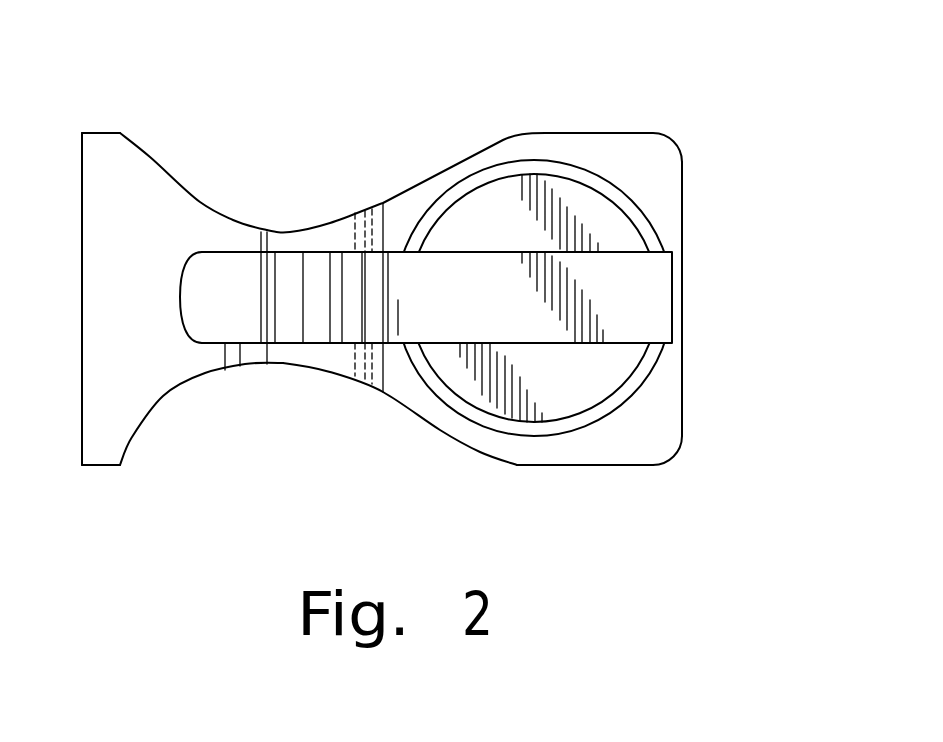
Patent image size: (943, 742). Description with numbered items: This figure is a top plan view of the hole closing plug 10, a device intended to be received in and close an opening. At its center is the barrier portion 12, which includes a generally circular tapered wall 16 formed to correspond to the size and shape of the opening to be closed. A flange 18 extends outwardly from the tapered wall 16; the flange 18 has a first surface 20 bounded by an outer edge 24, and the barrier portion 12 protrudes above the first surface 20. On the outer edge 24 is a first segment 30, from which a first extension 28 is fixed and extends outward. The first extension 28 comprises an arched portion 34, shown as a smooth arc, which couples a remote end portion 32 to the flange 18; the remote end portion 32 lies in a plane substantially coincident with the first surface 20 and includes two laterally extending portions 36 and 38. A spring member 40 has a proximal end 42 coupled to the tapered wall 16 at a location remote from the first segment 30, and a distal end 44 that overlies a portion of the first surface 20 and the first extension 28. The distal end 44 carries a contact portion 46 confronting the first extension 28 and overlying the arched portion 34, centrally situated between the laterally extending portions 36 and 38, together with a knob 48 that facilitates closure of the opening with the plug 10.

The hole closing plug 10 is at (415, 264).
The barrier portion 12 is at (570, 193).
The tapered wall 16 is at (459, 198).
The flange 18 is at (667, 198).
The first surface 20 is at (652, 436).
The outer edge 24 is at (617, 465).
The first extension 28 is at (162, 390).
The first segment 30 is at (397, 392).
The remote end portion 32 is at (80, 300).
The arched portion 34 is at (298, 352).
The laterally extending portion 36 is at (98, 147).
The laterally extending portion 38 is at (105, 445).
The spring member 40 is at (500, 292).
The proximal end 42 is at (672, 298).
The distal end 44 is at (233, 283).
The contact portion 46 is at (322, 290).
The knob 48 is at (187, 297).